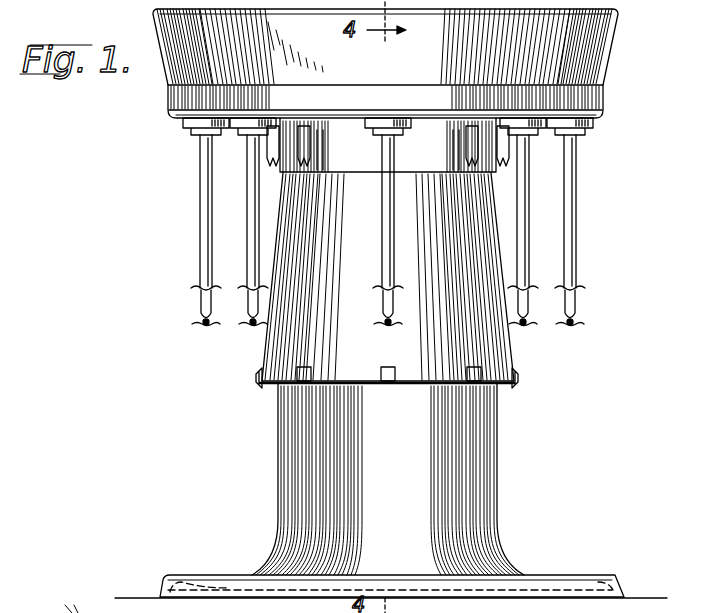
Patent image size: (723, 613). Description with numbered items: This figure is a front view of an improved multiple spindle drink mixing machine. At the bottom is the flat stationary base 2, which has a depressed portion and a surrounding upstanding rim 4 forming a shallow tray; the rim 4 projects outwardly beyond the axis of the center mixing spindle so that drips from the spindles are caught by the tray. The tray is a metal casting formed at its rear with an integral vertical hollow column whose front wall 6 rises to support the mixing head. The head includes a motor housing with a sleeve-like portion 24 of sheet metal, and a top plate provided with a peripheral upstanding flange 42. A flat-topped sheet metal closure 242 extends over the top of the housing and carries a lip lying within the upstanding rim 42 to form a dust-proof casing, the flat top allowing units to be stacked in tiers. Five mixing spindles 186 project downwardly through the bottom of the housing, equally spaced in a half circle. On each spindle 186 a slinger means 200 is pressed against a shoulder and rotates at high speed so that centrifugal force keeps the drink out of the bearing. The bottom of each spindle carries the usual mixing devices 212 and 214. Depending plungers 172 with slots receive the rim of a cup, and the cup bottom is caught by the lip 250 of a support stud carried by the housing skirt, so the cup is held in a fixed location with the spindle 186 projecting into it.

The sheet metal closure 242 is at (612, 30).
The peripheral upstanding flange 42 is at (604, 100).
The slinger means 200 is at (586, 128).
The plunger 172 is at (300, 140).
The sleeve-like portion 24 is at (489, 229).
The mixing spindle 186 is at (578, 232).
The mixing device 212 is at (584, 288).
The mixing device 214 is at (583, 324).
The lip 250 is at (255, 377).
The front wall 6 is at (388, 479).
The base 2 is at (563, 582).
The rim 4 is at (621, 580).